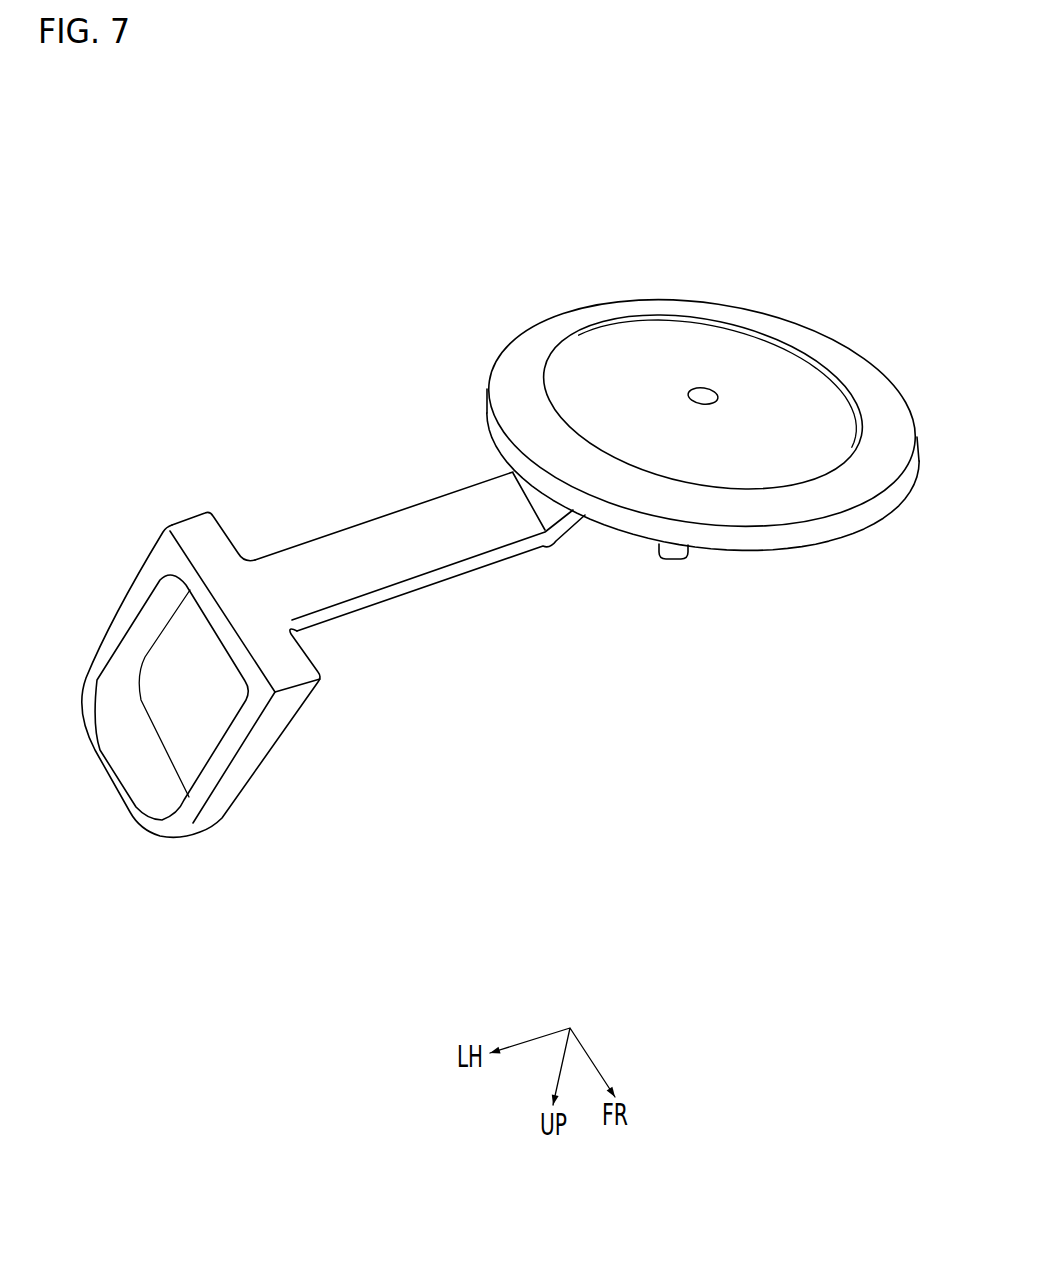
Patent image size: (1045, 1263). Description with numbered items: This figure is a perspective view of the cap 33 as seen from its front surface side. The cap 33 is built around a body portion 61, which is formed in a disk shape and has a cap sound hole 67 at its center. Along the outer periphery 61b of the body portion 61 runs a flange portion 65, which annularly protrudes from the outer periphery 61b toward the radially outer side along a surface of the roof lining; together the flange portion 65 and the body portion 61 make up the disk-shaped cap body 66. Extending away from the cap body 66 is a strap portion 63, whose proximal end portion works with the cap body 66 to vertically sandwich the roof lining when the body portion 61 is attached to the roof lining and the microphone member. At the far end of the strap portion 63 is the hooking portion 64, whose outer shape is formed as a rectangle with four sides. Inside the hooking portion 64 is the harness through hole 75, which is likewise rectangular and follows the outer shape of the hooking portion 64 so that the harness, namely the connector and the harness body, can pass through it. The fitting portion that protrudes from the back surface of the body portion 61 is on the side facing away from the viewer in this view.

The cap 33 is at (598, 294).
The body portion 61 is at (745, 353).
The outer periphery 61b is at (866, 428).
The strap portion 63 is at (382, 535).
The hooking portion 64 is at (103, 640).
The flange portion 65 is at (853, 366).
The cap body 66 is at (887, 143).
The cap sound hole 67 is at (701, 389).
The harness through hole 75 is at (142, 775).